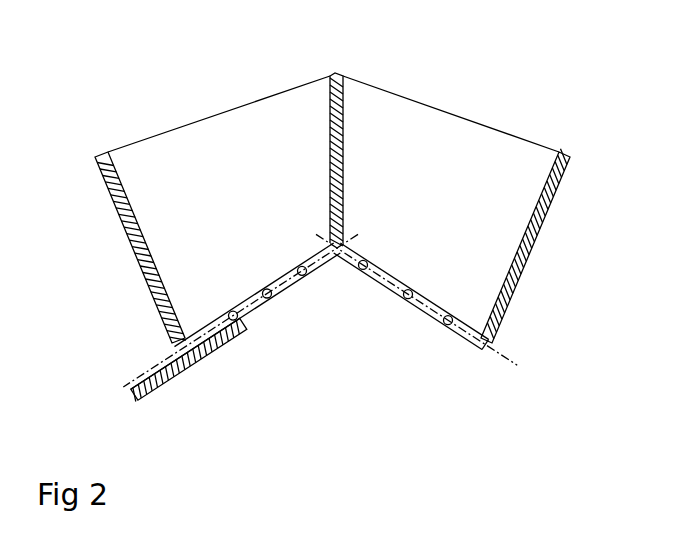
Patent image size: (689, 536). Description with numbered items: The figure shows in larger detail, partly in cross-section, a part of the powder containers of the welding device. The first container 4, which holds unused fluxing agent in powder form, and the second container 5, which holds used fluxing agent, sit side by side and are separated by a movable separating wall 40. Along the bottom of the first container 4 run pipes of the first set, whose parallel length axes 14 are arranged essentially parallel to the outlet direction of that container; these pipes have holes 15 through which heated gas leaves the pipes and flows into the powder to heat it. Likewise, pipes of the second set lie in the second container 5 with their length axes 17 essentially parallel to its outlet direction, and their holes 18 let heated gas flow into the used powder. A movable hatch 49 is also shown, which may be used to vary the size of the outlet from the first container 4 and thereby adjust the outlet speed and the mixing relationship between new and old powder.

The first container 4 is at (227, 201).
The second container 5 is at (438, 209).
The movable separating wall 40 is at (340, 108).
The length axes 14 is at (138, 378).
The holes 15 is at (235, 320).
The length axes 17 is at (522, 372).
The holes 18 is at (364, 269).
The movable hatch 49 is at (173, 385).